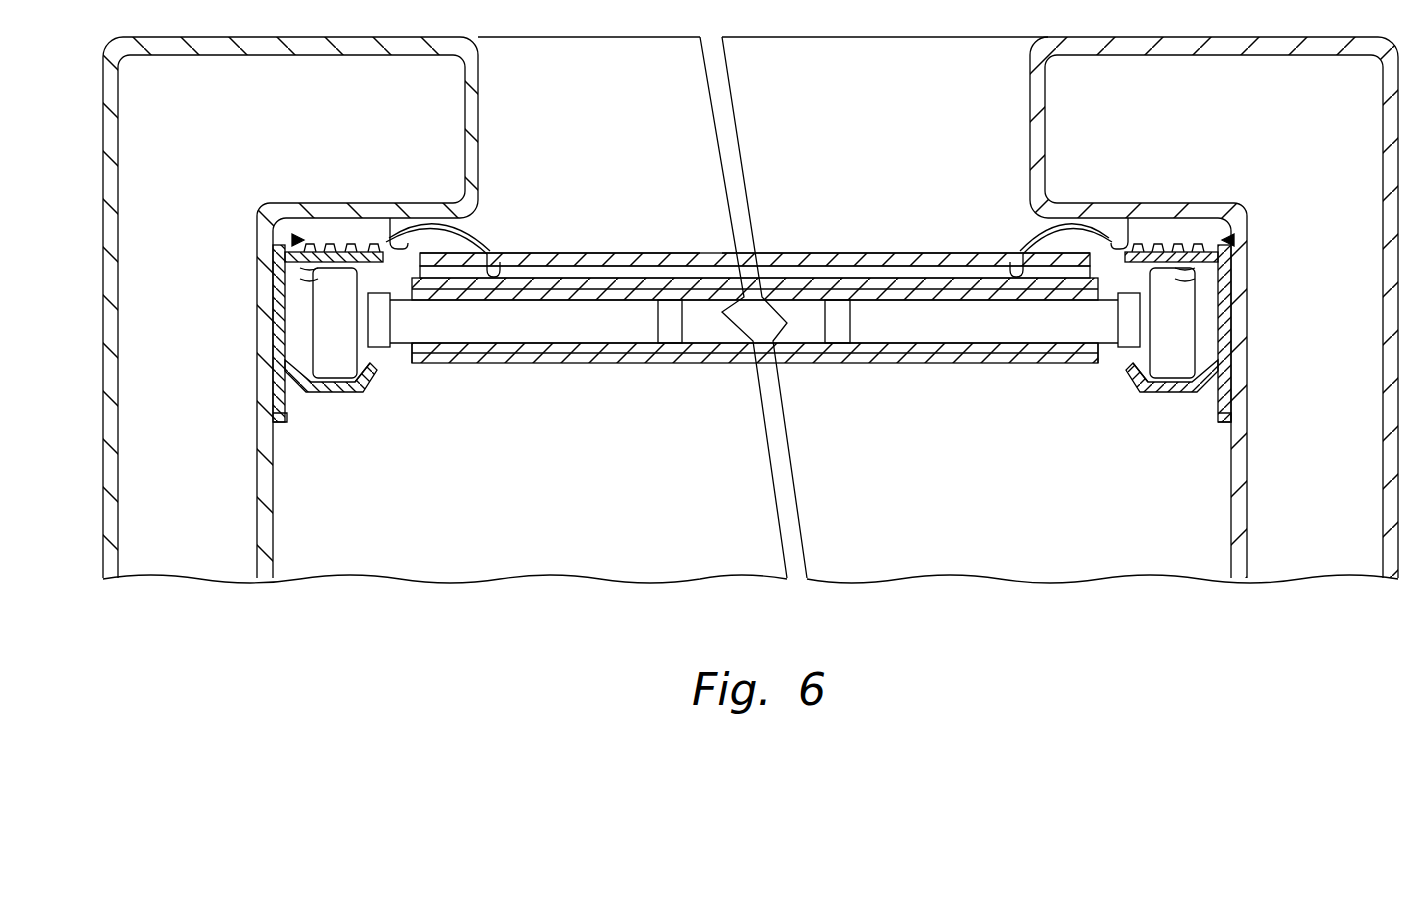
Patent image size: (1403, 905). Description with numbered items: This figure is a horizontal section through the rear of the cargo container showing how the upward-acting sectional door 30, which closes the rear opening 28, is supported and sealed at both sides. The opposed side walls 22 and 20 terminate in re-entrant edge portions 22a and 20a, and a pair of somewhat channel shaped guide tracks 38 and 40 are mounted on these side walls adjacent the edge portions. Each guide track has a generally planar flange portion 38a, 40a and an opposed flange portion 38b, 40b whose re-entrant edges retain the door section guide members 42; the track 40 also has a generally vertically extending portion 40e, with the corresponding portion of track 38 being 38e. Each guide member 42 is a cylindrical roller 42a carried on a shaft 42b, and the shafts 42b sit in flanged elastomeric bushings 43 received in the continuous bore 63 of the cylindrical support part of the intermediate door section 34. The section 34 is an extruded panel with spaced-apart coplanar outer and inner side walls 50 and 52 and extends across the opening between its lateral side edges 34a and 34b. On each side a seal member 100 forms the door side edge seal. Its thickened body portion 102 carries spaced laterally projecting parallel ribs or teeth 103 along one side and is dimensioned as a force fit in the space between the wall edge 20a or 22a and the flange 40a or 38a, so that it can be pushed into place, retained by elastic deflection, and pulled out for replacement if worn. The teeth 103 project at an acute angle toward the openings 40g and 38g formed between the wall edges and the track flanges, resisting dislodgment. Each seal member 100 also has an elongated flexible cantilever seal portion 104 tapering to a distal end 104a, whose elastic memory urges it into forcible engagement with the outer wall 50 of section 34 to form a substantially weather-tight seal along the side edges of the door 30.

The side wall 20 is at (1398, 447).
The re-entrant edge portion 20a is at (1087, 240).
The side wall 22 is at (100, 395).
The re-entrant edge portion 22a is at (393, 240).
The rear opening 28 is at (1032, 105).
The upward-acting sectional door 30 is at (626, 235).
The intermediate door section 34 is at (810, 253).
The lateral side edge 34a is at (412, 363).
The lateral side edge 34b is at (1092, 363).
The guide track 38 is at (330, 395).
The flange portion 38a is at (350, 250).
The opposed flange portion 38b is at (363, 390).
The vertically extending portion 38e is at (275, 415).
The opening 38g is at (406, 245).
The guide track 40 is at (1170, 395).
The flange portion 40a is at (1175, 240).
The opposed flange portion 40b is at (1140, 392).
The vertically extending portion 40e is at (1240, 414).
The opening 40g is at (1105, 262).
The guide member 42 is at (330, 313).
The cylindrical roller 42a is at (333, 347).
The shaft 42b is at (512, 322).
The flanged elastomeric bushing 43 is at (607, 345).
The outer side wall 50 is at (673, 253).
The inner side wall 52 is at (800, 365).
The bore 63 is at (695, 337).
The seal member 100 is at (292, 240).
The thickened body portion 102 is at (360, 245).
The ribs or teeth 103 is at (316, 281).
The cantilever seal portion 104 is at (480, 240).
The distal end 104a is at (497, 265).